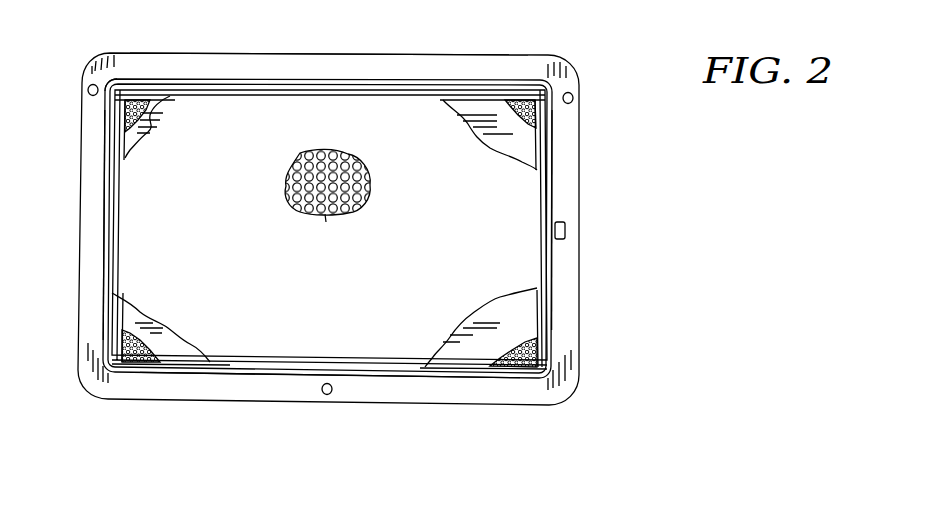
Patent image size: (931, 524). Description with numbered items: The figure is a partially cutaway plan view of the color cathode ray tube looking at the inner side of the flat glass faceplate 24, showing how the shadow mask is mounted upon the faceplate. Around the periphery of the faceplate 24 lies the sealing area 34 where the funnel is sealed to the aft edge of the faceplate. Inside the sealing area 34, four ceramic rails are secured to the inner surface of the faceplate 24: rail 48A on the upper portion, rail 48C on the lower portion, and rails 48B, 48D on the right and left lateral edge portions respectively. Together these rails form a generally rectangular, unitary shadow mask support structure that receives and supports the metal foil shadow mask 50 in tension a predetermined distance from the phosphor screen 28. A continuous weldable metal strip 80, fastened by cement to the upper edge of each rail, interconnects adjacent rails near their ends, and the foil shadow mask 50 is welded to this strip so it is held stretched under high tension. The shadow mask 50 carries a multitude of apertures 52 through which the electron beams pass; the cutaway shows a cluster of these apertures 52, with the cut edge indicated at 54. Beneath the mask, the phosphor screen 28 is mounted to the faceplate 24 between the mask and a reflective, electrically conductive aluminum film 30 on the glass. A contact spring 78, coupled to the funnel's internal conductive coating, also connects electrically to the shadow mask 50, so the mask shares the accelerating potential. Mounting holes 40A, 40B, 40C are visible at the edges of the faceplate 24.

The flat faceplate 24 is at (580, 266).
The phosphor screen 28 is at (523, 100).
The reflective and electrically conductive aluminum film 30 is at (520, 137).
The sealing area 34 is at (297, 53).
The mounting hole 40A is at (89, 91).
The mounting hole 40B is at (573, 99).
The mounting hole 40C is at (332, 391).
The rail 48A is at (488, 82).
The rail 48B is at (552, 122).
The rail 48C is at (160, 372).
The rail 48D is at (107, 137).
The metal foil shadow mask 50 is at (362, 320).
The apertures 52 is at (250, 184).
The stem 54 is at (328, 228).
The contact spring 78 is at (566, 232).
The weldable metal strip 80 is at (117, 82).